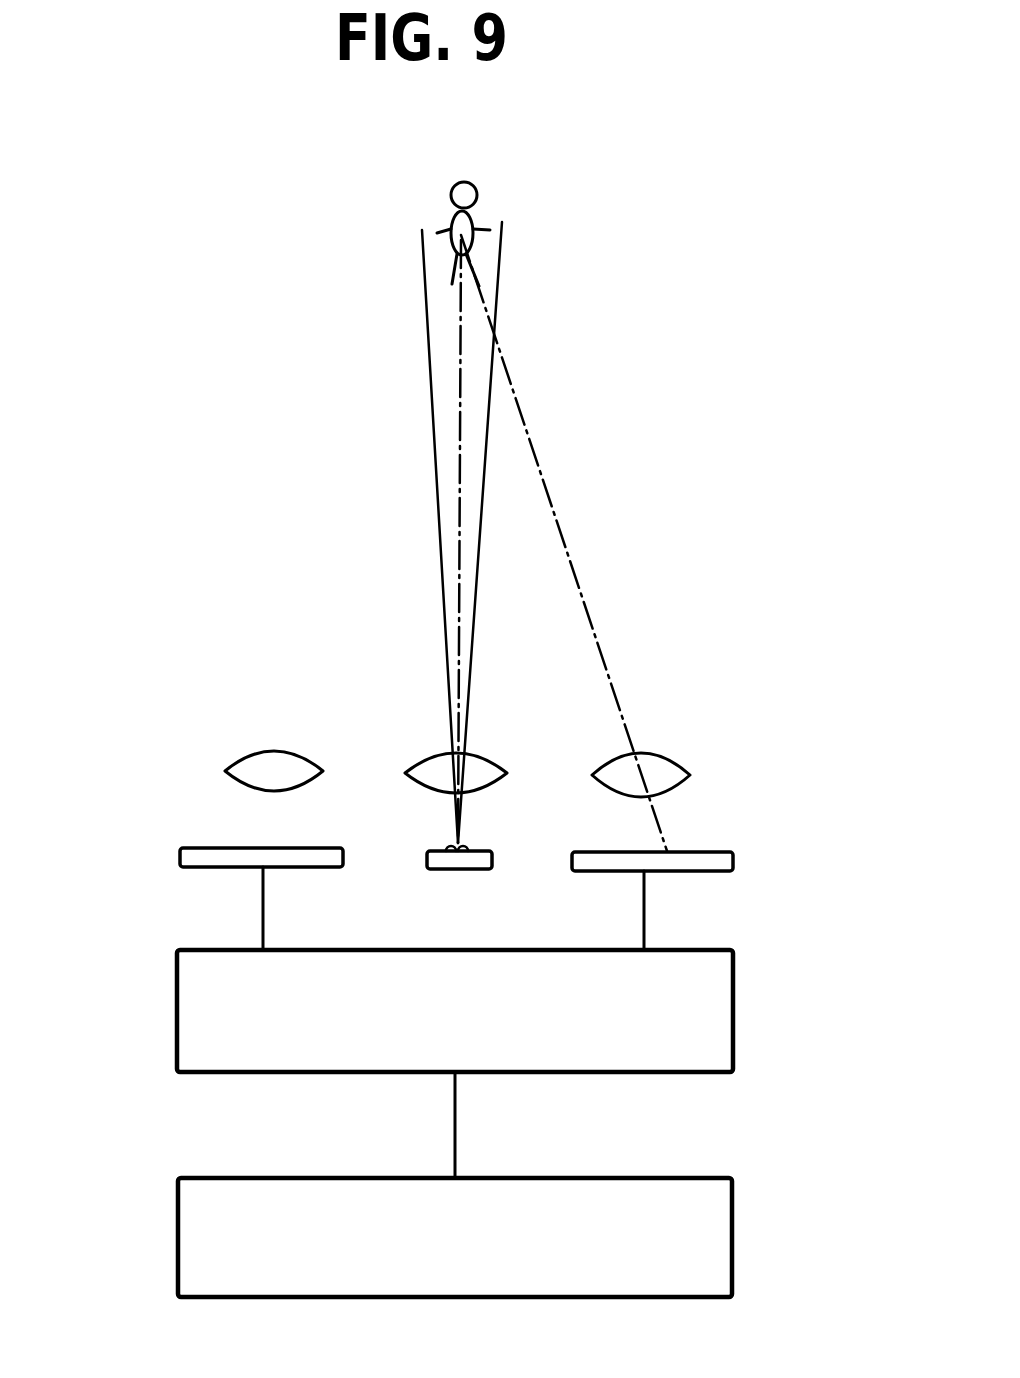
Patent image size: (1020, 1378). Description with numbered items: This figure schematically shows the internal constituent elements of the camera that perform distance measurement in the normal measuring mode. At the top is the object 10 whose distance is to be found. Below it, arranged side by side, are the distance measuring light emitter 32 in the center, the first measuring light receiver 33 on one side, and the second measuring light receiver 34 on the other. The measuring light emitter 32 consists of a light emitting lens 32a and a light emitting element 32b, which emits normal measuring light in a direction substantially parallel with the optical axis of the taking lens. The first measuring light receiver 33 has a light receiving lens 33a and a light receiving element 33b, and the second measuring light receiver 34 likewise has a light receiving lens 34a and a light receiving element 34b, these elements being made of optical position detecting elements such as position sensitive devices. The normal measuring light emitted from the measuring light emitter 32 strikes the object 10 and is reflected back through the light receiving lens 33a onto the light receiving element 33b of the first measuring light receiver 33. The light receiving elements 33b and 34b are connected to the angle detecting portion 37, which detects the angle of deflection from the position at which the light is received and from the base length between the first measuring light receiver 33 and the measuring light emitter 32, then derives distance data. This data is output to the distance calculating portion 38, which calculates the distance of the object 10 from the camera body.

The object 10 is at (385, 236).
The distance measuring light emitter 32 is at (459, 775).
The light emitting lens 32a is at (505, 758).
The light emitting element 32b is at (458, 870).
The first measuring light receiver 33 is at (729, 773).
The light receiving lens 33a is at (672, 760).
The light receiving element 33b is at (710, 872).
The second measuring light receiver 34 is at (203, 762).
The light receiving lens 34a is at (276, 750).
The light receiving element 34b is at (243, 868).
The angle detecting portion 37 is at (733, 1043).
The distance calculating portion 38 is at (733, 1252).